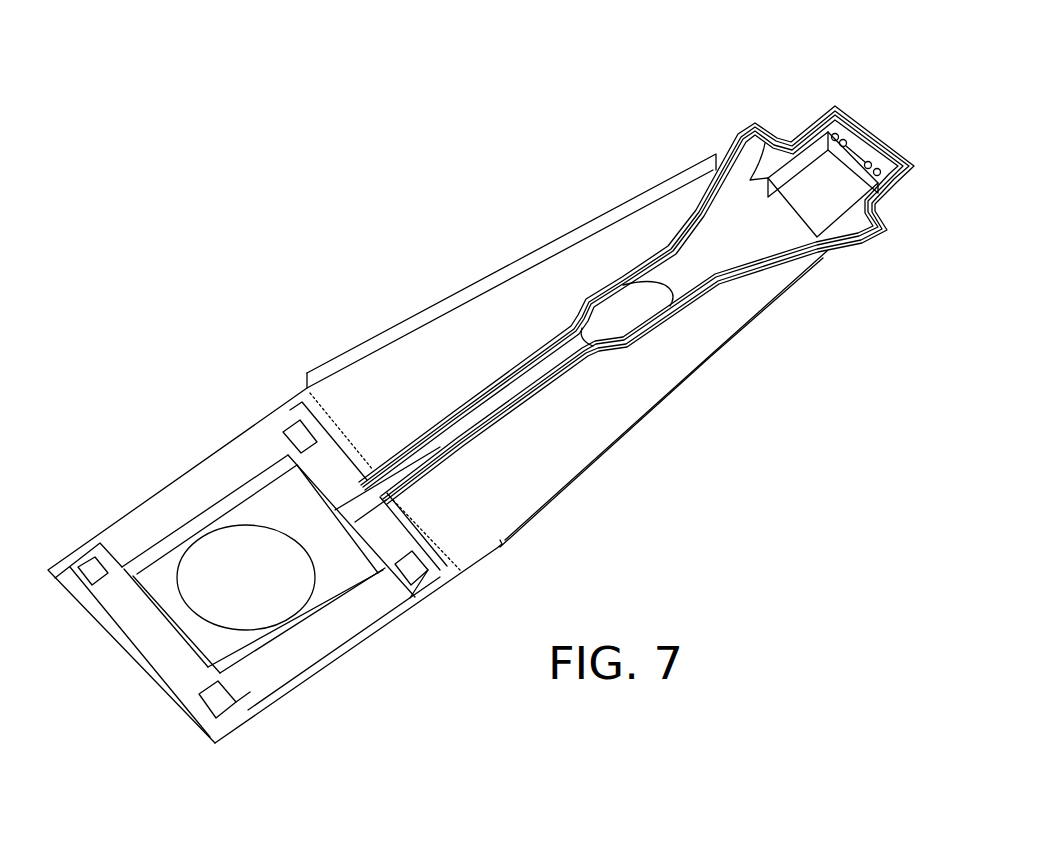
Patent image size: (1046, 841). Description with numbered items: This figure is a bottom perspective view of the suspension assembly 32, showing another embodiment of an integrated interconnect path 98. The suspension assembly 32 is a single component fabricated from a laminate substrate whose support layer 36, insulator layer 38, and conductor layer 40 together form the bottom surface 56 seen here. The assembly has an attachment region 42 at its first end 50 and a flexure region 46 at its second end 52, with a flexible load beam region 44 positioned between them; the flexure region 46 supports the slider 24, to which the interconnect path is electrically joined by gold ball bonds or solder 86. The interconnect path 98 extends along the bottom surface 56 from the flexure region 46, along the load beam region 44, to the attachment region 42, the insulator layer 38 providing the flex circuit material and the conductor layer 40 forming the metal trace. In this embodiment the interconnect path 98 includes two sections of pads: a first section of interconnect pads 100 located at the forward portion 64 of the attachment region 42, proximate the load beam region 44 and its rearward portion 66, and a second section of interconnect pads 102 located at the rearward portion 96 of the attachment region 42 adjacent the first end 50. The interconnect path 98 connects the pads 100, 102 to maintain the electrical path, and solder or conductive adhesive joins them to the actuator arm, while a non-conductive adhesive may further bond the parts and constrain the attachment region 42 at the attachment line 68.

The slider 24 is at (825, 203).
The suspension assembly 32 is at (107, 478).
The support layer 36 is at (573, 235).
The insulator layer 38 is at (560, 365).
The conductor layer 40 is at (497, 418).
The attachment region 42 is at (180, 503).
The load beam region 44 is at (433, 367).
The flexure region 46 is at (872, 140).
The first end 50 is at (106, 636).
The second end 52 is at (862, 120).
The bottom surface 56 is at (493, 327).
The forward portion 64 is at (248, 443).
The rearward portion 66 is at (338, 393).
The attachment line 68 is at (432, 538).
The solder 86 is at (873, 165).
The rearward portion 96 is at (63, 573).
The interconnect path 98 is at (706, 292).
The first section of interconnect pads 100 is at (292, 435).
The second section of interconnect pads 102 is at (90, 568).